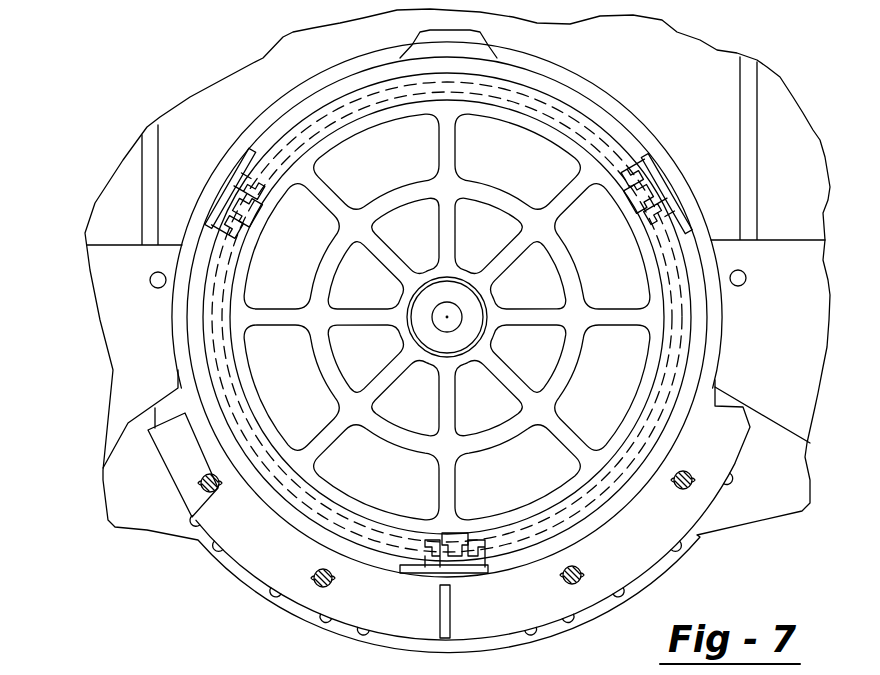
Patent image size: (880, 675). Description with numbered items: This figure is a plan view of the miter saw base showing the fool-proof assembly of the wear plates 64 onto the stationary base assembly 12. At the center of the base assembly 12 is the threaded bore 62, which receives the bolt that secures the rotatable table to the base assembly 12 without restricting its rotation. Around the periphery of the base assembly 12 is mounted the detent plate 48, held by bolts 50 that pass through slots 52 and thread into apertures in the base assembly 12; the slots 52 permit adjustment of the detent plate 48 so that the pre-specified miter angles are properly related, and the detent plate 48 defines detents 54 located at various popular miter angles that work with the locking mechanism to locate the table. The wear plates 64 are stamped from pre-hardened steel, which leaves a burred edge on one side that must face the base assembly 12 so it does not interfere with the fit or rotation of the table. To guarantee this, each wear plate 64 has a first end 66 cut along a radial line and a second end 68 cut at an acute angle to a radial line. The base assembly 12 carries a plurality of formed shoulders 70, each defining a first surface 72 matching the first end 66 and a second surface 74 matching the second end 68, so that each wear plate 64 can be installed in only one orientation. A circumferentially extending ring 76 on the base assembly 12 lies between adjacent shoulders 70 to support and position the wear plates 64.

The base assembly 12 is at (767, 500).
The detent plate 48 is at (633, 553).
The bolts 50 is at (580, 608).
The slots 52 is at (200, 485).
The detents 54 is at (318, 614).
The threaded bore 62 is at (449, 319).
The wear plates 64 is at (380, 86).
The first end 66 is at (430, 575).
The second end 68 is at (485, 570).
The formed shoulders 70 is at (455, 530).
The first surface 72 is at (430, 540).
The second surface 74 is at (478, 540).
The circumferentially extending ring 76 is at (215, 340).